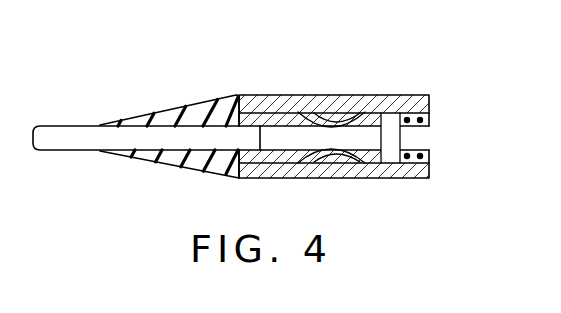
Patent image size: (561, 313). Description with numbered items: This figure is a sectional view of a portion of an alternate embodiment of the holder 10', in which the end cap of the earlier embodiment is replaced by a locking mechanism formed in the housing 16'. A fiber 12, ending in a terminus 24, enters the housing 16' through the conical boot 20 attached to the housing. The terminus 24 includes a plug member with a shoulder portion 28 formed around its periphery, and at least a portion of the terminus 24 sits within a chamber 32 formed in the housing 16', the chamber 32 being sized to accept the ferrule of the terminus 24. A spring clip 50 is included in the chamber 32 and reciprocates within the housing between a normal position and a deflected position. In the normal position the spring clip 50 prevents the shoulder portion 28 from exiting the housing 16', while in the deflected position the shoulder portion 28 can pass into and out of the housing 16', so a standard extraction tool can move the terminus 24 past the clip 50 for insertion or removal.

The holder 10' is at (279, 115).
The fiber 12 is at (63, 140).
The housing 16' is at (338, 157).
The boot 20 is at (208, 162).
The terminus 24 is at (423, 139).
The shoulder portion 28 is at (390, 126).
The chamber 32 is at (280, 157).
The spring clip 50 is at (319, 114).